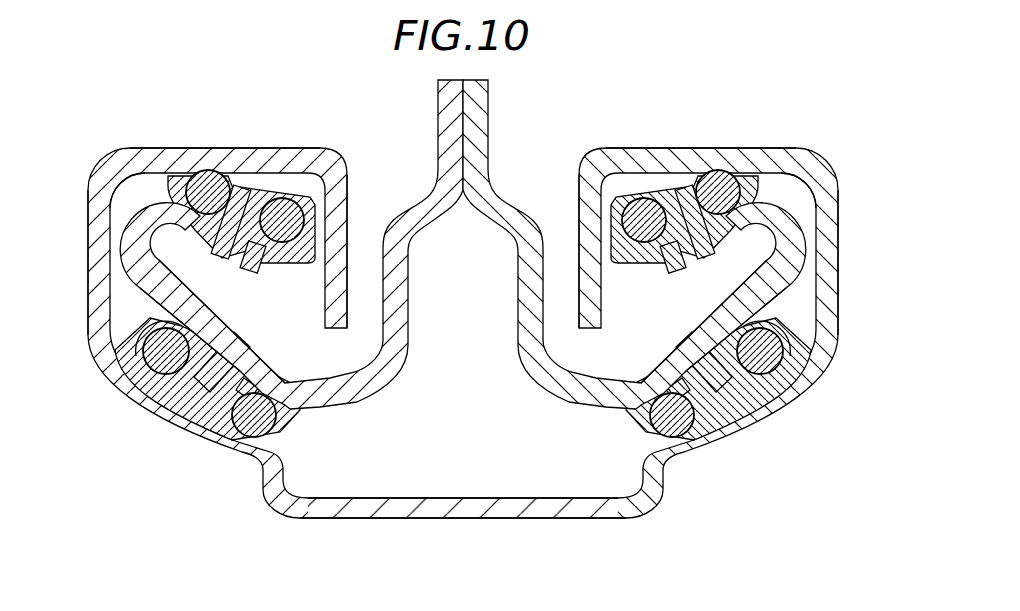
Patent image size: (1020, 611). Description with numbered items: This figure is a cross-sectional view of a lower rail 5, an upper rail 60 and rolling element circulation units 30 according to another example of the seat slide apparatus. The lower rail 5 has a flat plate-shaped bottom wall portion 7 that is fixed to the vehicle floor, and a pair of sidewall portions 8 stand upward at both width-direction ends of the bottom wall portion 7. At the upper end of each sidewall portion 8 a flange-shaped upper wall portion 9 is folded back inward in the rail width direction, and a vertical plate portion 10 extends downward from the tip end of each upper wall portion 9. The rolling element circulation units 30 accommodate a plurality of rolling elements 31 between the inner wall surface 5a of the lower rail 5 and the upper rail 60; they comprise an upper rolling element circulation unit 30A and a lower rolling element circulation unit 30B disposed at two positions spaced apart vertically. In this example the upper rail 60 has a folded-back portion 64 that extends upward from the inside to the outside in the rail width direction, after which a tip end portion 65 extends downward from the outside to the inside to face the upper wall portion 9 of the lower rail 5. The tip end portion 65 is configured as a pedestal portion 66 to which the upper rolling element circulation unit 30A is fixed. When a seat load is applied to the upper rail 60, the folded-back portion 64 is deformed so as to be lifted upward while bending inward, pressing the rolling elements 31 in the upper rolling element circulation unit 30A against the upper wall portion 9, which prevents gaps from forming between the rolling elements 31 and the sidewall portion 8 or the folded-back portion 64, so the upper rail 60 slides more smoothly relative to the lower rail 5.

The lower rail 5 is at (516, 518).
The inner wall surface 5a is at (135, 180).
The bottom wall portion 7 is at (472, 518).
The sidewall portion 8 is at (94, 282).
The upper wall portion 9 is at (250, 162).
The vertical plate portion 10 is at (338, 258).
The rolling element circulation unit 30 is at (280, 187).
The upper rolling element circulation unit 30A is at (463, 219).
The lower rolling element circulation unit 30B is at (463, 379).
The rolling element 31 is at (207, 170).
The upper rail 60 is at (495, 93).
The folded-back portion 64 is at (132, 300).
The tip end portion 65 is at (248, 272).
The pedestal portion 66 is at (198, 228).